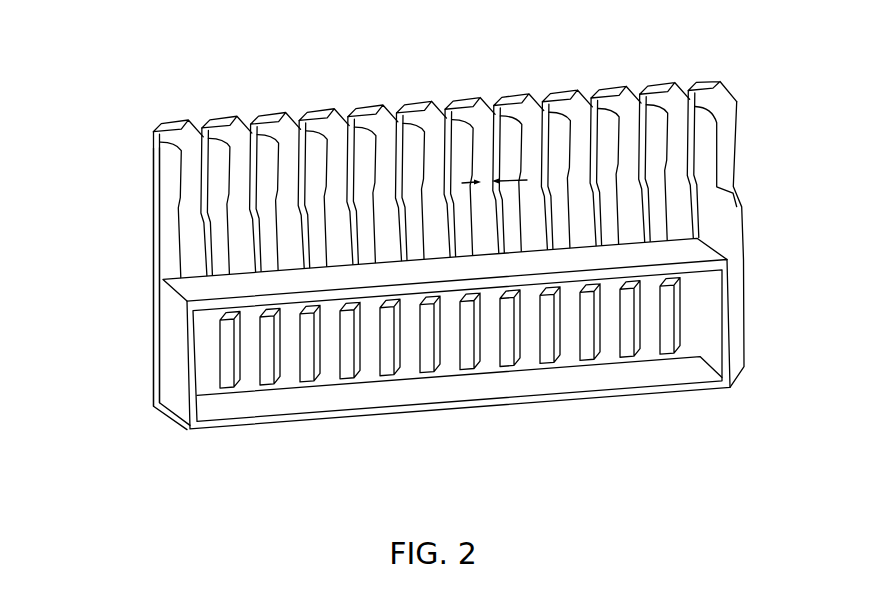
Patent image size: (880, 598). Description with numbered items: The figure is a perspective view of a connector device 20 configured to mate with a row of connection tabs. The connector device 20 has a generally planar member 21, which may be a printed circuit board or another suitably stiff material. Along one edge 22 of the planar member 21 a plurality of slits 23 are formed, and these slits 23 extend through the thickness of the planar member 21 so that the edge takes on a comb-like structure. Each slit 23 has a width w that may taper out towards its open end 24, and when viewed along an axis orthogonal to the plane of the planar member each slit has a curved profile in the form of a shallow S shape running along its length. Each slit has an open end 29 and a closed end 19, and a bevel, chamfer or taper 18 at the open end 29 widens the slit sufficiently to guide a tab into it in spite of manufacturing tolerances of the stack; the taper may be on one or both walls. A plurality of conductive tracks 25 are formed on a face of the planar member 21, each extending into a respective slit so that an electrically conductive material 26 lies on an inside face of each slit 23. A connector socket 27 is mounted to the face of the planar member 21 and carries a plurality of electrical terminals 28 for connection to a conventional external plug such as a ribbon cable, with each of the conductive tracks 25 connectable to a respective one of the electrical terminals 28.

The taper 18 is at (692, 90).
The closed end 19 is at (707, 184).
The connector device 20 is at (139, 77).
The planar member 21 is at (143, 282).
The edge 22 is at (465, 105).
The slits 23 is at (338, 101).
The open end 24 is at (481, 120).
The conductive tracks 25 is at (170, 258).
The electrically conductive material 26 is at (250, 137).
The connector socket 27 is at (692, 391).
The electrical terminals 28 is at (508, 370).
The open end 29 is at (391, 110).
The width W is at (530, 178).